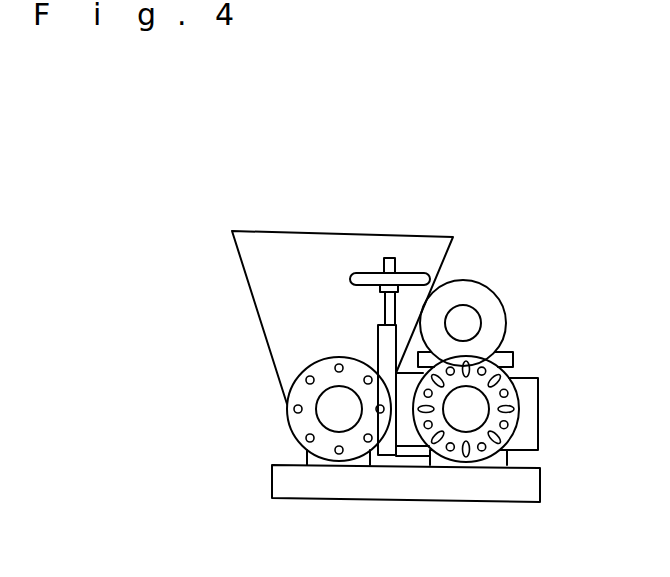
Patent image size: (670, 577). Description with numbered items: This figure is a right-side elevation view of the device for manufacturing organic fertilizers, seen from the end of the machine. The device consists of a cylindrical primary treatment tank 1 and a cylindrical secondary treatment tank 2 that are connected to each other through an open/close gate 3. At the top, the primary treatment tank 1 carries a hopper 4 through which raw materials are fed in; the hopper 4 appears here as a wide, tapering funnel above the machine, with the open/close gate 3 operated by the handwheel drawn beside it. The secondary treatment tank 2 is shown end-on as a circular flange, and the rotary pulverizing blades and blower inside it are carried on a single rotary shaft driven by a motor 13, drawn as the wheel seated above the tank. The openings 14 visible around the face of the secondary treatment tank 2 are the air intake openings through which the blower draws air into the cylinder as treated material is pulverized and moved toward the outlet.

The primary treatment tank 1 is at (286, 451).
The secondary treatment tank 2 is at (518, 370).
The open/close gate 3 is at (408, 272).
The hopper 4 is at (345, 250).
The motor 13 is at (488, 308).
The opening for air intake 14 is at (500, 444).